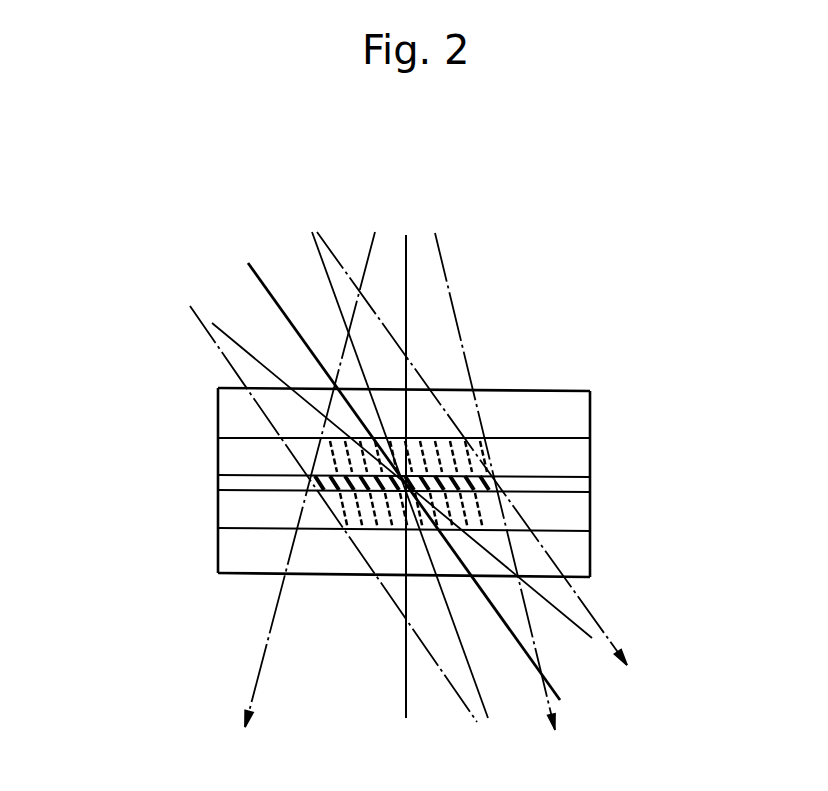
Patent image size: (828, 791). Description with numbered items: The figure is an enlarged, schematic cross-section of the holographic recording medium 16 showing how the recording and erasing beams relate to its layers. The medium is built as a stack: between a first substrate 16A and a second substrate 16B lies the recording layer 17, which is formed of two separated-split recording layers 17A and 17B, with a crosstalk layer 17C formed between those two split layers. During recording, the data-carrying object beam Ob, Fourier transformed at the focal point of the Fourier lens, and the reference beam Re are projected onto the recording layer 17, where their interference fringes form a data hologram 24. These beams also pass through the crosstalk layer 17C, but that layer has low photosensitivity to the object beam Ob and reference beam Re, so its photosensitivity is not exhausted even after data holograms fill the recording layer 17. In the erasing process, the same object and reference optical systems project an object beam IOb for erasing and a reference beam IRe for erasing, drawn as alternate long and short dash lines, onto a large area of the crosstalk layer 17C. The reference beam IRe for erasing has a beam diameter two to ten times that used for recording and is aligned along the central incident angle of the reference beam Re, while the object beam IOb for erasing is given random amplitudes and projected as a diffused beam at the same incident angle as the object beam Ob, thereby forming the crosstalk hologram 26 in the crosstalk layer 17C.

The holographic recording medium 16 is at (544, 333).
The first substrate 16A is at (584, 555).
The second substrate 16B is at (584, 407).
The recording layer 17 is at (439, 486).
The separated-split recording layer 17A is at (584, 512).
The separated-split recording layer 17B is at (584, 455).
The crosstalk layer 17C is at (232, 483).
The data hologram 24 is at (346, 512).
The crosstalk hologram 26 is at (490, 462).
The reference beam Re is at (256, 270).
The object beam Ob is at (406, 262).
The reference beam for erasing IRe is at (188, 307).
The object beam for erasing IOb is at (447, 282).